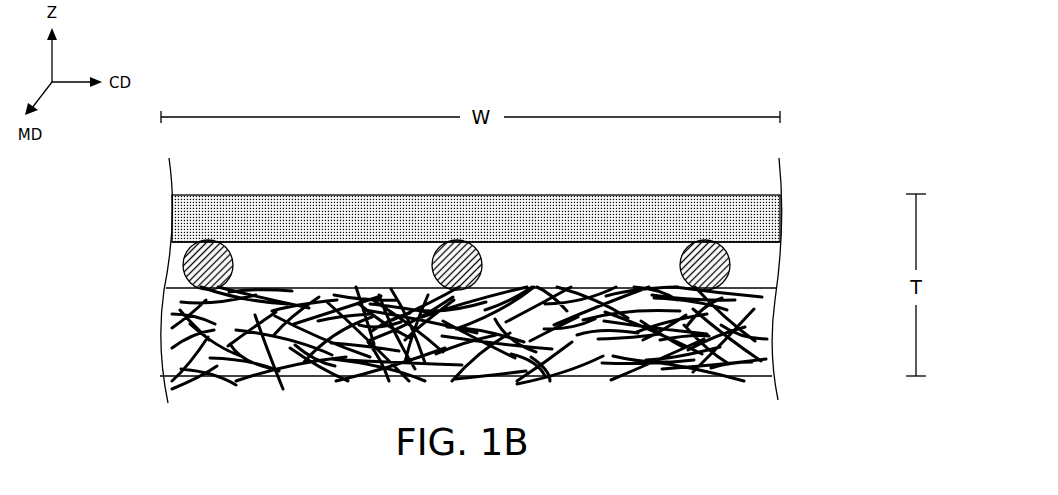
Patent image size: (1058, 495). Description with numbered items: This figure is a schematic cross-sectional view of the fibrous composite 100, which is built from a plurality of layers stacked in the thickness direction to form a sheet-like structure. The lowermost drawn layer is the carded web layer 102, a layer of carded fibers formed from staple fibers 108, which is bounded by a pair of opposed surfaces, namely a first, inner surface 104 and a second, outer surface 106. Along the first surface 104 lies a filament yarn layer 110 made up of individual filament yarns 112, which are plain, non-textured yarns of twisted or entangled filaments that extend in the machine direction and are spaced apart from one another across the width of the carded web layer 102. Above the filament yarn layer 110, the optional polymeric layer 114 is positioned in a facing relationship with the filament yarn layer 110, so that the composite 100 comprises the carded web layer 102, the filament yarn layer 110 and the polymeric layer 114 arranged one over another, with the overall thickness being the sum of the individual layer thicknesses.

The composite 100 is at (483, 249).
The carded web layer 102 is at (464, 305).
The first surface 104 is at (543, 288).
The second surface 106 is at (650, 377).
The staple fibers 108 is at (745, 320).
The filament yarn layer 110 is at (464, 265).
The filament yarns 112 is at (718, 272).
The polymeric layer 114 is at (150, 212).